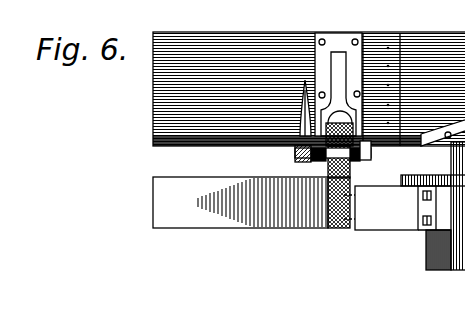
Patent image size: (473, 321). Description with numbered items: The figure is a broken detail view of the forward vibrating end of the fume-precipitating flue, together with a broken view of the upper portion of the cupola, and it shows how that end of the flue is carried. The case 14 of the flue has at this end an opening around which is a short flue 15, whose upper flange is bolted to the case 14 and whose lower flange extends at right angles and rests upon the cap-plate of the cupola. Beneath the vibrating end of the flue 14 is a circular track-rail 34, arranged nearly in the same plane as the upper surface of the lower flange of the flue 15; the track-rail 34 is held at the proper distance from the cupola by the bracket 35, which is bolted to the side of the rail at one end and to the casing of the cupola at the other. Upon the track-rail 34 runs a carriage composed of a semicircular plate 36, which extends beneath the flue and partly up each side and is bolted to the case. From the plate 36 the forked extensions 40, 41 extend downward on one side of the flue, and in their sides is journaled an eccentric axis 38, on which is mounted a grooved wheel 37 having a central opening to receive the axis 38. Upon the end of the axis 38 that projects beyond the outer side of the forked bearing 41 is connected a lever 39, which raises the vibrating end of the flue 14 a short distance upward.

The case 14 is at (145, 99).
The short flue 15 is at (438, 150).
The circular track-rail 34 is at (234, 218).
The bracket 35 is at (398, 196).
The semicircular plate 36 is at (338, 84).
The grooved wheel 37 is at (342, 163).
The eccentric axis 38 is at (328, 197).
The lever 39 is at (276, 137).
The forked extension 40 is at (360, 152).
The forked extension 41 is at (295, 148).